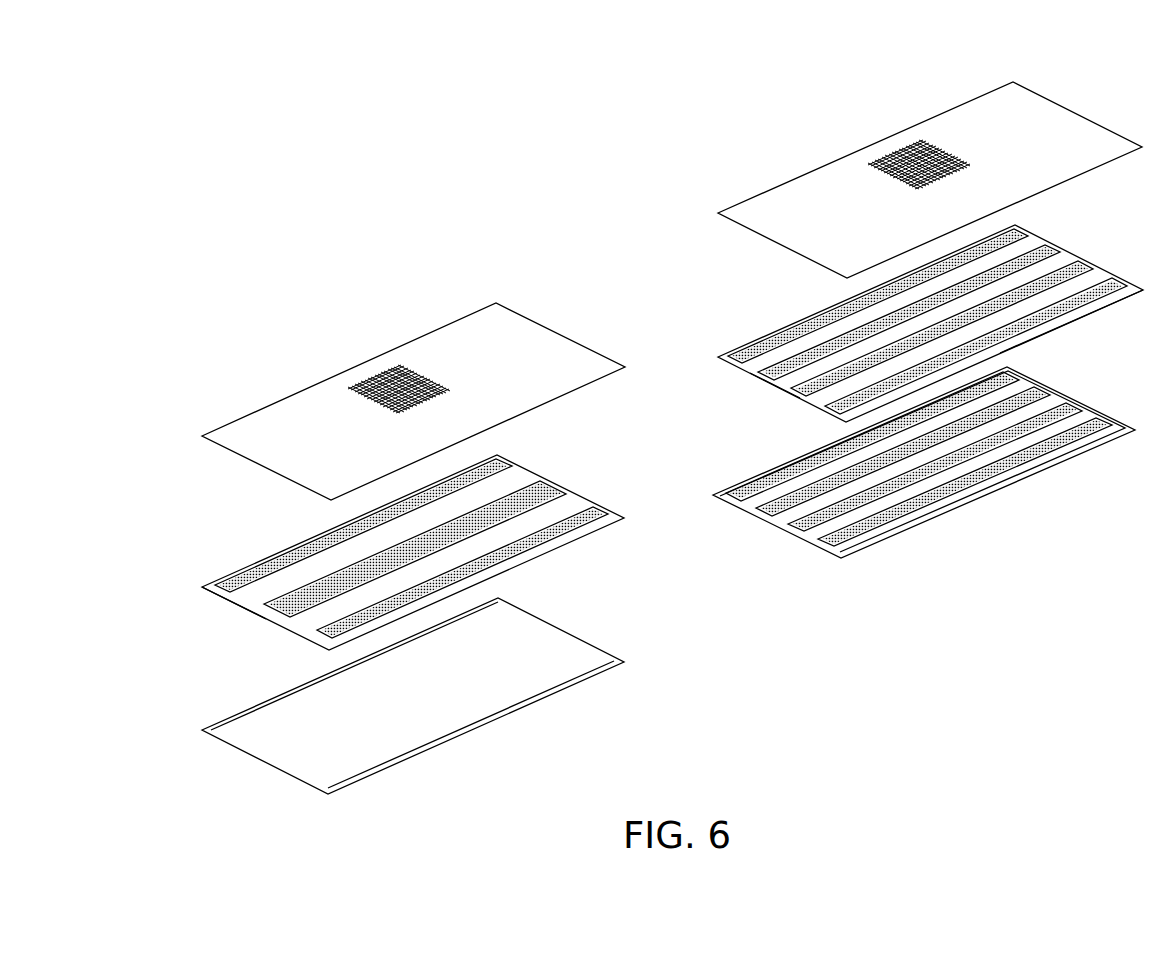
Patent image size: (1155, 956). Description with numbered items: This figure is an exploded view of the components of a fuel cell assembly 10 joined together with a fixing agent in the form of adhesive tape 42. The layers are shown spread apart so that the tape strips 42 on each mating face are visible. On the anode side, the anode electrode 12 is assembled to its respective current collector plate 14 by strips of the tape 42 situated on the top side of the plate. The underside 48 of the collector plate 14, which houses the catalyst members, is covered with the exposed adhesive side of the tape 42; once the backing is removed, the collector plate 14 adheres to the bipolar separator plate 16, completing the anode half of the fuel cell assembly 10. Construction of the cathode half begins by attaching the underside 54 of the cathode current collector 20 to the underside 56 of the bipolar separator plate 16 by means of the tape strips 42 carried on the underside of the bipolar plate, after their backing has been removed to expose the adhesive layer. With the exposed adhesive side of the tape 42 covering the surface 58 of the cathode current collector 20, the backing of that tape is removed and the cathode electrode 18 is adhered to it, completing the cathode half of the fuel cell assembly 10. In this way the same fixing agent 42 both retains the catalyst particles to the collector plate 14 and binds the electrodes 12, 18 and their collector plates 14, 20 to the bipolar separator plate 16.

The fuel cell assembly 10 is at (321, 315).
The anode electrode 12 is at (578, 343).
The current collector plate 14 is at (600, 505).
The bipolar separator plate 16 is at (580, 640).
The cathode electrode 18 is at (1087, 119).
The cathode current collector 20 is at (1079, 259).
The fixing agent tape 42 is at (541, 497).
The underside of the collector plate 48 is at (234, 603).
The underside of the cathode current collector 54 is at (1065, 325).
The underside of the bipolar separator plate 56 is at (541, 703).
The surface of the cathode current collector 58 is at (778, 387).